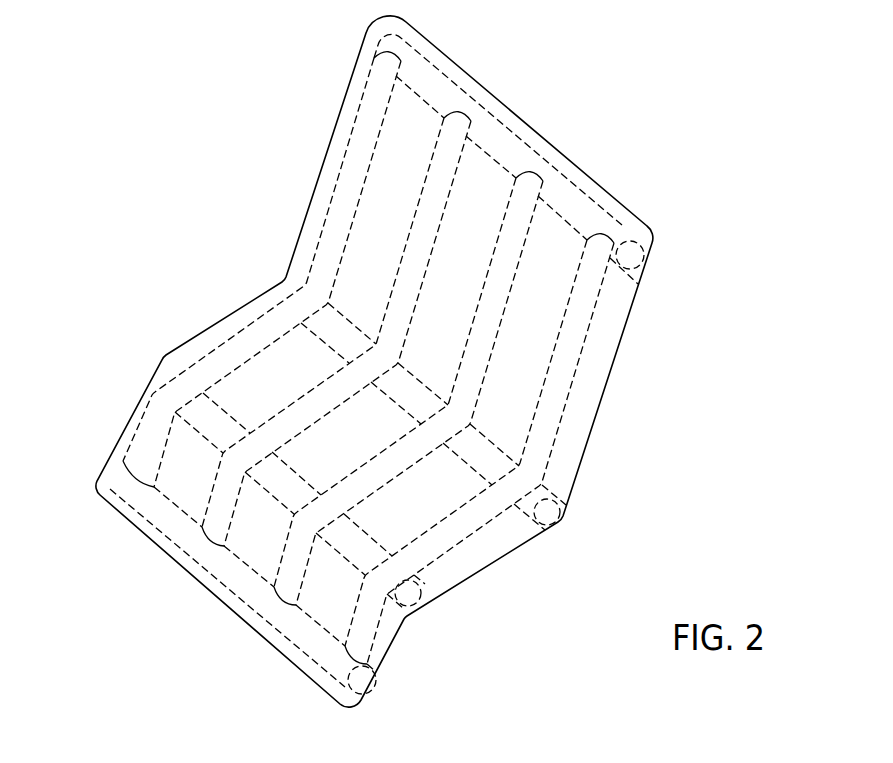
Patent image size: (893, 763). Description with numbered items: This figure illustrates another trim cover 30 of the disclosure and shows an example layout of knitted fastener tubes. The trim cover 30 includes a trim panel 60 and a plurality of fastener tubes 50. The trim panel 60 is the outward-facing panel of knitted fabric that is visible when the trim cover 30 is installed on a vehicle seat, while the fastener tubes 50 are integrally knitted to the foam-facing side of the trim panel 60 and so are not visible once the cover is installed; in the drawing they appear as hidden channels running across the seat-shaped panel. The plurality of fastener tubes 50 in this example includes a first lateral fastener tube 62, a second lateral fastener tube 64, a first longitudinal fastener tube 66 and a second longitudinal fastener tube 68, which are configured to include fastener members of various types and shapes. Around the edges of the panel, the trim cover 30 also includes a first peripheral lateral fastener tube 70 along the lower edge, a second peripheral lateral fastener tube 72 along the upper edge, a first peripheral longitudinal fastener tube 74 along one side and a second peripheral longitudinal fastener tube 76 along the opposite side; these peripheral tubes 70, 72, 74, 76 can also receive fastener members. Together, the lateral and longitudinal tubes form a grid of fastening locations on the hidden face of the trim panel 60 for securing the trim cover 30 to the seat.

The trim cover 30 is at (215, 215).
The fastener tubes 50 is at (472, 597).
The trim panel 60 is at (543, 270).
The first lateral fastener tube 62 is at (198, 403).
The second lateral fastener tube 64 is at (327, 325).
The first longitudinal fastener tube 66 is at (428, 203).
The second longitudinal fastener tube 68 is at (522, 208).
The first peripheral lateral fastener tube 70 is at (163, 512).
The second peripheral lateral fastener tube 72 is at (428, 87).
The first peripheral longitudinal fastener tube 74 is at (352, 173).
The second peripheral longitudinal fastener tube 76 is at (578, 328).